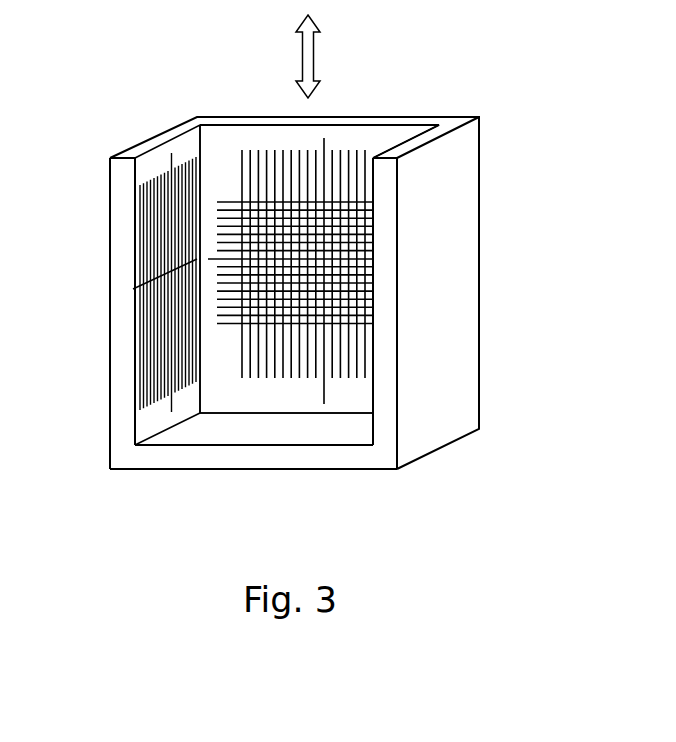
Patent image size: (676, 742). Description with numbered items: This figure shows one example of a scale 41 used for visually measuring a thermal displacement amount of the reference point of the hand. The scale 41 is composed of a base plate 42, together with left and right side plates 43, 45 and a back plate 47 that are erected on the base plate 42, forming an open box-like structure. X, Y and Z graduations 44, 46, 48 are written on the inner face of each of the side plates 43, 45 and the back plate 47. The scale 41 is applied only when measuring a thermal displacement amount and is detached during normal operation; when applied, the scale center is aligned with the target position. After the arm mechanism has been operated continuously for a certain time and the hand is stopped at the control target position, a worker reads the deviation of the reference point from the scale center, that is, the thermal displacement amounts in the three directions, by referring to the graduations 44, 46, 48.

The scale 41 is at (491, 182).
The base plate 42 is at (238, 470).
The side plate 43 is at (480, 370).
The X graduations 44 is at (253, 143).
The side plate 45 is at (110, 248).
The Y graduations 46 is at (220, 167).
The back plate 47 is at (365, 117).
The Z graduations 48 is at (162, 162).